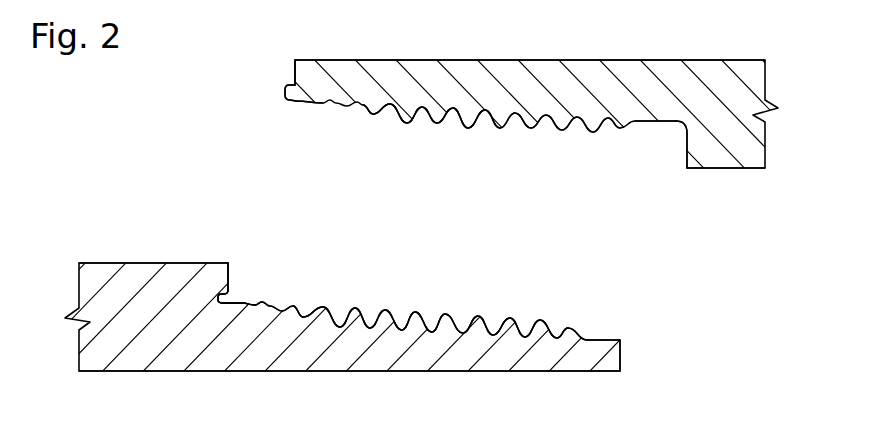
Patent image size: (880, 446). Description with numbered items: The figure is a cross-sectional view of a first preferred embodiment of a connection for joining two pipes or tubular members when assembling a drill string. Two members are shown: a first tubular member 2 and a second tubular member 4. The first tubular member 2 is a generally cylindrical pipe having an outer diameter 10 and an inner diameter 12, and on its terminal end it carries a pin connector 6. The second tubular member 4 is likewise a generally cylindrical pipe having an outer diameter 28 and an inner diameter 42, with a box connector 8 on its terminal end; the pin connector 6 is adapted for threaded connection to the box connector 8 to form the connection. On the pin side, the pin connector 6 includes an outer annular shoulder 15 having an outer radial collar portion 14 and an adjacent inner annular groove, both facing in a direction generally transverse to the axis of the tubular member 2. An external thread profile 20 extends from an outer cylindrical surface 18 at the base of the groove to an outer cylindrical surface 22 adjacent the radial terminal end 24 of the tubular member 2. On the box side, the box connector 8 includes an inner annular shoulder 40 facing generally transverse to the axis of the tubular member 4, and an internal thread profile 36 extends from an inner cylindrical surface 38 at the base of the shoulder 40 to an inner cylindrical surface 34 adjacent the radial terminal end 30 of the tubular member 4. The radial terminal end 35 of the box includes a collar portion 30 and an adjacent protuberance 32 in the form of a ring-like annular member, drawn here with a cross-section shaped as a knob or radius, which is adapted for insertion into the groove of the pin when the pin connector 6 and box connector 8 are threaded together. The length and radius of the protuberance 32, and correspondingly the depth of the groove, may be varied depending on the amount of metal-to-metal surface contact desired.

The first tubular member 2 is at (168, 361).
The second tubular member 4 is at (677, 77).
The pin connector 6 is at (223, 291).
The box connector 8 is at (390, 144).
The outer diameter 10 is at (145, 262).
The inner diameter 12 is at (327, 372).
The outer radial collar portion 14 is at (228, 268).
The outer annular shoulder 15 is at (251, 273).
The outer cylindrical surface 18 is at (244, 301).
The external thread profile 20 is at (385, 309).
The outer cylindrical surface 22 is at (612, 340).
The radial terminal end 24 is at (620, 360).
The outer diameter 28 is at (428, 60).
The collar portion 30 is at (293, 62).
The protuberance 32 is at (287, 93).
The inner cylindrical surface 34 is at (297, 103).
The radial terminal end 35 is at (278, 71).
The internal thread profile 36 is at (470, 128).
The inner cylindrical surface 38 is at (648, 122).
The inner annular shoulder 40 is at (684, 137).
The inner diameter 42 is at (730, 168).